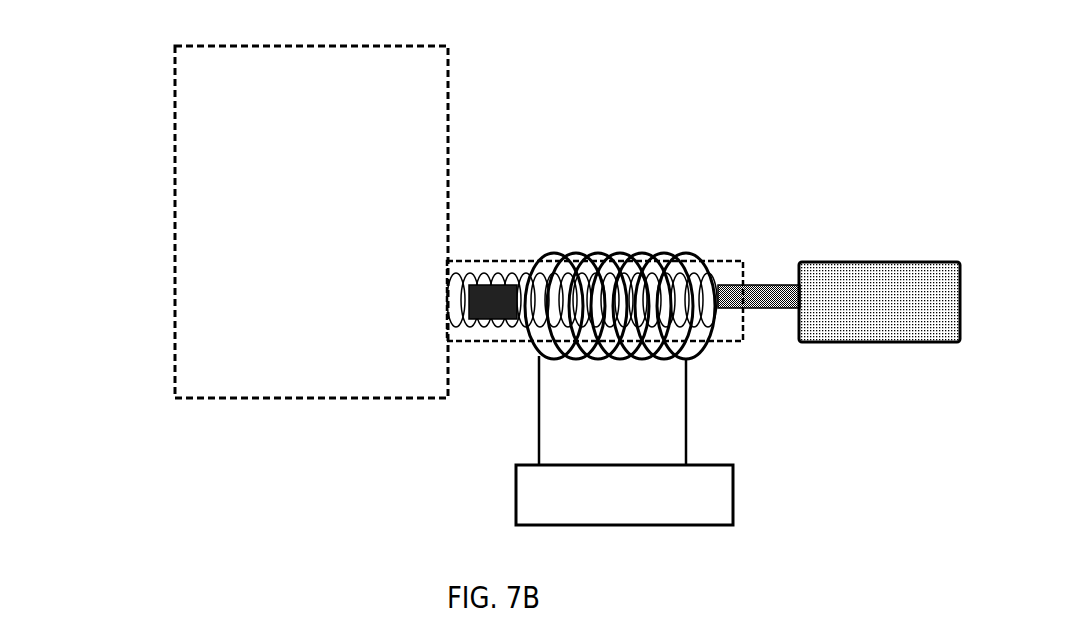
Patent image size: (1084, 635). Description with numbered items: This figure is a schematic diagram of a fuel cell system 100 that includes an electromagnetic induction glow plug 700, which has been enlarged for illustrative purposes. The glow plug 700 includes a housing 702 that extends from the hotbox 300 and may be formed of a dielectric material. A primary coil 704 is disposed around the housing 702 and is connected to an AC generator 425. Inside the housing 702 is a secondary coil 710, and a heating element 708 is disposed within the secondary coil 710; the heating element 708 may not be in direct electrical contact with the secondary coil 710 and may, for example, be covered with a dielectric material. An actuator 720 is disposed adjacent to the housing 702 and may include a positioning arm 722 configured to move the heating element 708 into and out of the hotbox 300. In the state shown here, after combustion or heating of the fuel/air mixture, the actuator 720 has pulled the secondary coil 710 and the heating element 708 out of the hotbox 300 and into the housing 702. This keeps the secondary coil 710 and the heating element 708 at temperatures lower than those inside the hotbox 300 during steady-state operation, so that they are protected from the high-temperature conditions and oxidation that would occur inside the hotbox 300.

The fuel cell system 100 is at (146, 64).
The hotbox 300 is at (335, 238).
The electromagnetic induction glow plug 700 is at (725, 150).
The housing 702 is at (738, 256).
The primary coil 704 is at (700, 343).
The heating element 708 is at (490, 328).
The secondary coil 710 is at (525, 280).
The actuator 720 is at (903, 318).
The positioning arm 722 is at (763, 308).
The AC generator 425 is at (733, 493).